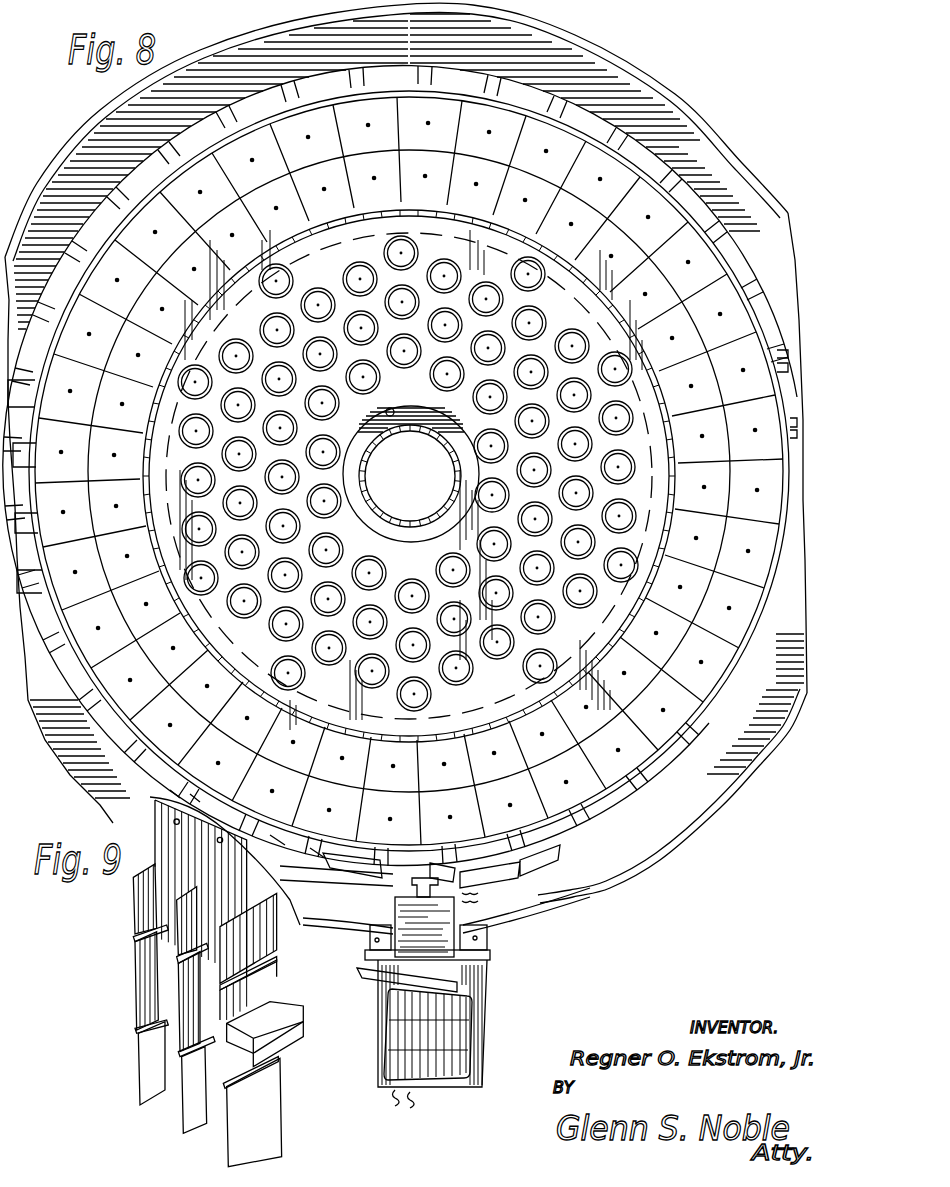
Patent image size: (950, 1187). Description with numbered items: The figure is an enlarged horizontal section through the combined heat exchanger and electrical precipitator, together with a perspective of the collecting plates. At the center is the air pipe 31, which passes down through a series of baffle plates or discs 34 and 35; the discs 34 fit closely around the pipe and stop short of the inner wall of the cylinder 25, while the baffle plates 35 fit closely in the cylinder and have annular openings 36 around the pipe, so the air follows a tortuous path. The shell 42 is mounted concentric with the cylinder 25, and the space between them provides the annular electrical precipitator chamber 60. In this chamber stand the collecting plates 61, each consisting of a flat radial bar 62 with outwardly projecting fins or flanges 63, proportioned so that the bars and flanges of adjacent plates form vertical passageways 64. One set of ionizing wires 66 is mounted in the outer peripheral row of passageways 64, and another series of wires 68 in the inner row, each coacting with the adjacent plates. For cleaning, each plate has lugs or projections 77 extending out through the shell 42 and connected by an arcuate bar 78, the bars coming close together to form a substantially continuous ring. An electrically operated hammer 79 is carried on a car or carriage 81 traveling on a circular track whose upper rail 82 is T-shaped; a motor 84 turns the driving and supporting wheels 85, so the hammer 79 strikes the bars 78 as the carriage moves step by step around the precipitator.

In FIG. 8, the shell or cylinder 25 is at (600, 652).
In FIG. 8, the air pipe 31 is at (403, 527).
In FIG. 8, the baffle plates or discs 34 is at (360, 452).
In FIG. 8, the baffle plates 35 is at (428, 420).
In FIG. 8, the annular openings 36 is at (391, 407).
In FIG. 8, the cylinder or shell 42 is at (665, 770).
In FIG. 8, the annular electrical precipitator chamber 60 is at (345, 715).
In FIG. 8, the collecting plates 61 is at (368, 818).
In FIG. 9, the collecting plates 61 is at (187, 1015).
In FIG. 8, the flat radial bars 62 is at (420, 776).
In FIG. 9, the flat radial bars 62 is at (187, 888).
In FIG. 8, the fins or flanges 63 is at (348, 748).
In FIG. 9, the fins or flanges 63 is at (196, 1035).
In FIG. 8, the vertical passageways 64 is at (435, 722).
In FIG. 8, the ionizing electrodes or wires 66 is at (455, 822).
In FIG. 8, the wires or electrodes 68 is at (470, 760).
In FIG. 8, the lugs or projections 77 is at (500, 868).
In FIG. 9, the lugs or projections 77 is at (274, 1010).
In FIG. 8, the arcuate bar 78 is at (500, 868).
In FIG. 9, the arcuate bar 78 is at (290, 1044).
In FIG. 8, the hammer 79 is at (394, 904).
In FIG. 8, the car or carriage 81 is at (360, 958).
In FIG. 8, the upper rail 82 is at (663, 840).
In FIG. 8, the motor 84 is at (468, 1040).
In FIG. 8, the driving and supporting wheels 85 is at (373, 918).